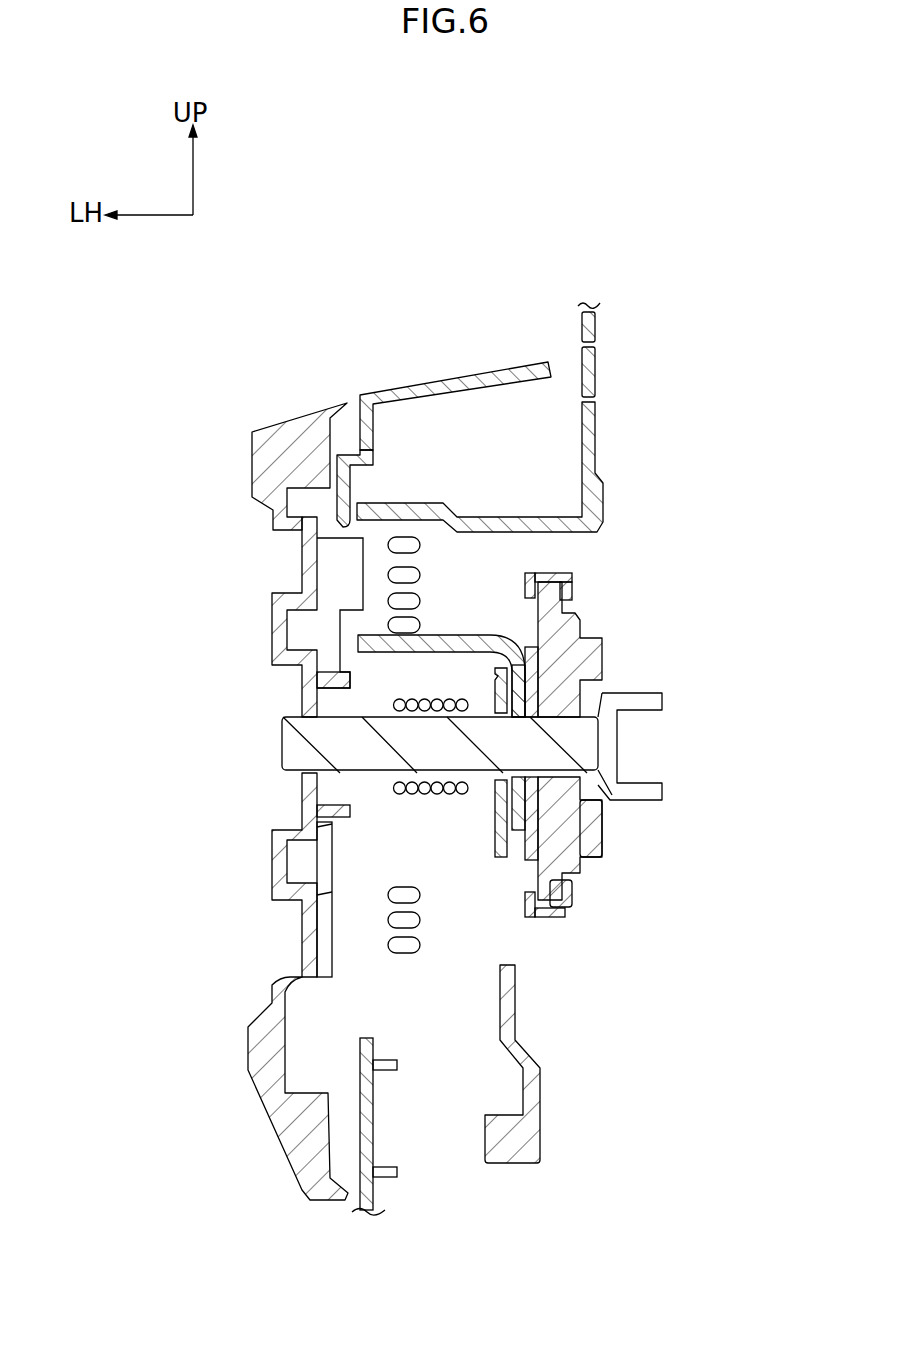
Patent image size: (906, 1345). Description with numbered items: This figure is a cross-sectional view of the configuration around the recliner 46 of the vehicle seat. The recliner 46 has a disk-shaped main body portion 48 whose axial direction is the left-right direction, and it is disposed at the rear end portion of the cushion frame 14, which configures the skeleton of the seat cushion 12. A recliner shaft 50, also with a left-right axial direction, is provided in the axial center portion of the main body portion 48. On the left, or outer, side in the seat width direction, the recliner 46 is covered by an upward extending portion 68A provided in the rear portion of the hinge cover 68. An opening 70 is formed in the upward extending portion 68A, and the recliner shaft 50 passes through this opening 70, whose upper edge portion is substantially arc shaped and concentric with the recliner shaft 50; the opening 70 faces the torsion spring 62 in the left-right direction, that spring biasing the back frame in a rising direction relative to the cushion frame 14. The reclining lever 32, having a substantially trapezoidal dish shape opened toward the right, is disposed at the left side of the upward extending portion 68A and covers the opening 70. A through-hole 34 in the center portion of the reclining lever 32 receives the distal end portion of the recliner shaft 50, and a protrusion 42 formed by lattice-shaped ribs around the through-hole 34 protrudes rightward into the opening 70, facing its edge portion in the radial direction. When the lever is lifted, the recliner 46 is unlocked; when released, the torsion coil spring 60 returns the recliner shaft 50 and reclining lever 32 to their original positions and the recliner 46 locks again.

The seat cushion 12 is at (480, 451).
The cushion frame 14 is at (528, 572).
The reclining lever 32 is at (280, 421).
The through-hole 34 is at (298, 722).
The protrusion 42 is at (340, 572).
The recliner 46 is at (642, 630).
The main body portion 48 is at (590, 846).
The recliner shaft 50 is at (282, 752).
The torsion coil spring 60 is at (437, 797).
The torsion spring 62 is at (405, 955).
The hinge cover 68 is at (455, 345).
The upward extending portion 68A is at (436, 386).
The opening 70 is at (340, 530).